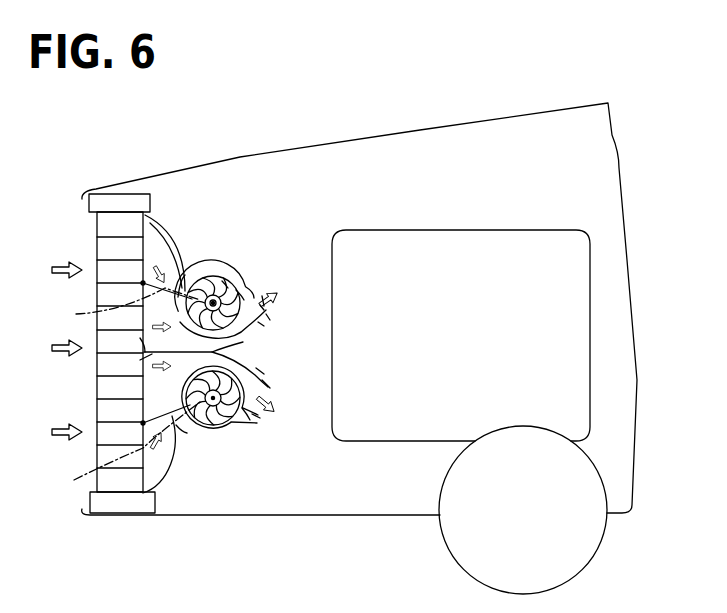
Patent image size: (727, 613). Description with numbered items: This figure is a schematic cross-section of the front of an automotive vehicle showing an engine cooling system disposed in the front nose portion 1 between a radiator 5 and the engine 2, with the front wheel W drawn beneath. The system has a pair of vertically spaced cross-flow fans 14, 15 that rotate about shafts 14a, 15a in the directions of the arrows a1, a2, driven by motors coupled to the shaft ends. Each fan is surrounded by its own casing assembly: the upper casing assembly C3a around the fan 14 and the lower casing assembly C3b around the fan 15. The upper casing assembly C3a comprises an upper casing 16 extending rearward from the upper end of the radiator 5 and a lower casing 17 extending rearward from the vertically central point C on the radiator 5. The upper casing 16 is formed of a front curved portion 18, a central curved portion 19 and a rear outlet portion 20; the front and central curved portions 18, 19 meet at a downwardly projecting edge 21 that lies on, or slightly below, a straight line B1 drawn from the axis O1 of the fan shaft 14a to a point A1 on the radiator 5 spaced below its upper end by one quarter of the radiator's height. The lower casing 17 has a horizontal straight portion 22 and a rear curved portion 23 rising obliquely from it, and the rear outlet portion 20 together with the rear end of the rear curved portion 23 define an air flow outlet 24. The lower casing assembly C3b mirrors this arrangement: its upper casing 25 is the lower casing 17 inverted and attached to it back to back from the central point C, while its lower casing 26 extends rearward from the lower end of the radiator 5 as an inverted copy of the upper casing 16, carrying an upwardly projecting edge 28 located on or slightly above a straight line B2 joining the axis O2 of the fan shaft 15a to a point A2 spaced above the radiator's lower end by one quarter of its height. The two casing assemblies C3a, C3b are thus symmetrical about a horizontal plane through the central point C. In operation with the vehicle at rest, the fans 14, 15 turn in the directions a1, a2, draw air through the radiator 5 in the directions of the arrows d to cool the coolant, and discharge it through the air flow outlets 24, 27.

The front nose portion 1 is at (444, 126).
The engine 2 is at (515, 240).
The radiator 5 is at (108, 250).
The cross-flow fan 14 is at (250, 278).
The fan shaft 14a is at (258, 287).
The cross-flow fan 15 is at (222, 432).
The fan shaft 15a is at (245, 420).
The upper casing 16 is at (168, 236).
The lower casing 17 is at (243, 342).
The front curved portion 18 is at (182, 280).
The central curved portion 19 is at (224, 280).
The rear outlet portion 20 is at (263, 306).
The downwardly projecting edge 21 is at (188, 277).
The horizontal straight portion 22 is at (148, 357).
The rear curved portion 23 is at (268, 318).
The air flow outlet 24 is at (262, 308).
The upper casing 25 is at (270, 385).
The lower casing 26 is at (187, 432).
The air flow outlet 27 is at (258, 415).
The upwardly projecting edge 28 is at (175, 410).
The point on the radiator A1 is at (143, 283).
The point on the radiator A2 is at (143, 423).
The straight line B1 is at (123, 309).
The straight line B2 is at (123, 453).
The central point C is at (144, 352).
The upper casing assembly C3a is at (163, 218).
The lower casing assembly C3b is at (168, 478).
The axis of the fan shaft O1 is at (195, 325).
The axis of the fan shaft O2 is at (216, 420).
The front wheel W is at (533, 434).
The air flow direction arrows d is at (155, 351).
The rotation direction arrow a1 is at (262, 323).
The rotation direction arrow a2 is at (262, 371).